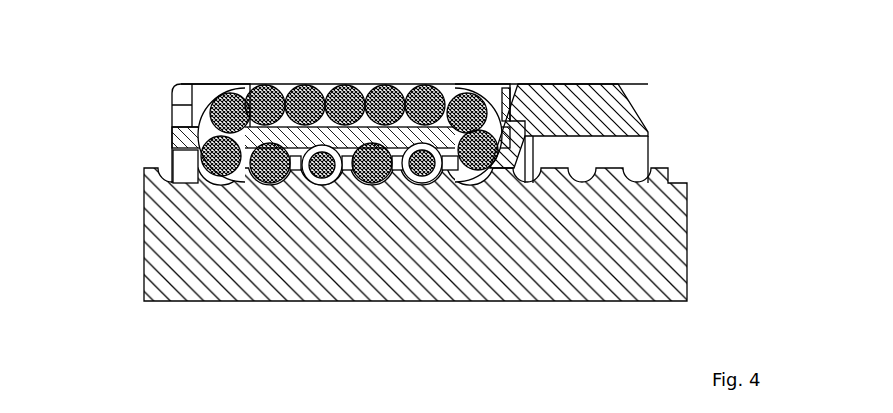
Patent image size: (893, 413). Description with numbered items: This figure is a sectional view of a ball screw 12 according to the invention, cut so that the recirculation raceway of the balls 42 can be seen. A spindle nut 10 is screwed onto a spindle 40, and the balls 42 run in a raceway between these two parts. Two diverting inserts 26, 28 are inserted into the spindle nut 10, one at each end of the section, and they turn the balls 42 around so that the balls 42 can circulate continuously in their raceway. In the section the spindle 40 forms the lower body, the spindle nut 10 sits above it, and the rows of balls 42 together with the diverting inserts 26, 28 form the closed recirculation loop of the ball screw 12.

The ball screw 12 is at (384, 170).
The spindle nut 10 is at (606, 110).
The diverting insert 26 is at (202, 93).
The diverting insert 28 is at (492, 95).
The spindle 40 is at (633, 253).
The balls 42 is at (343, 103).